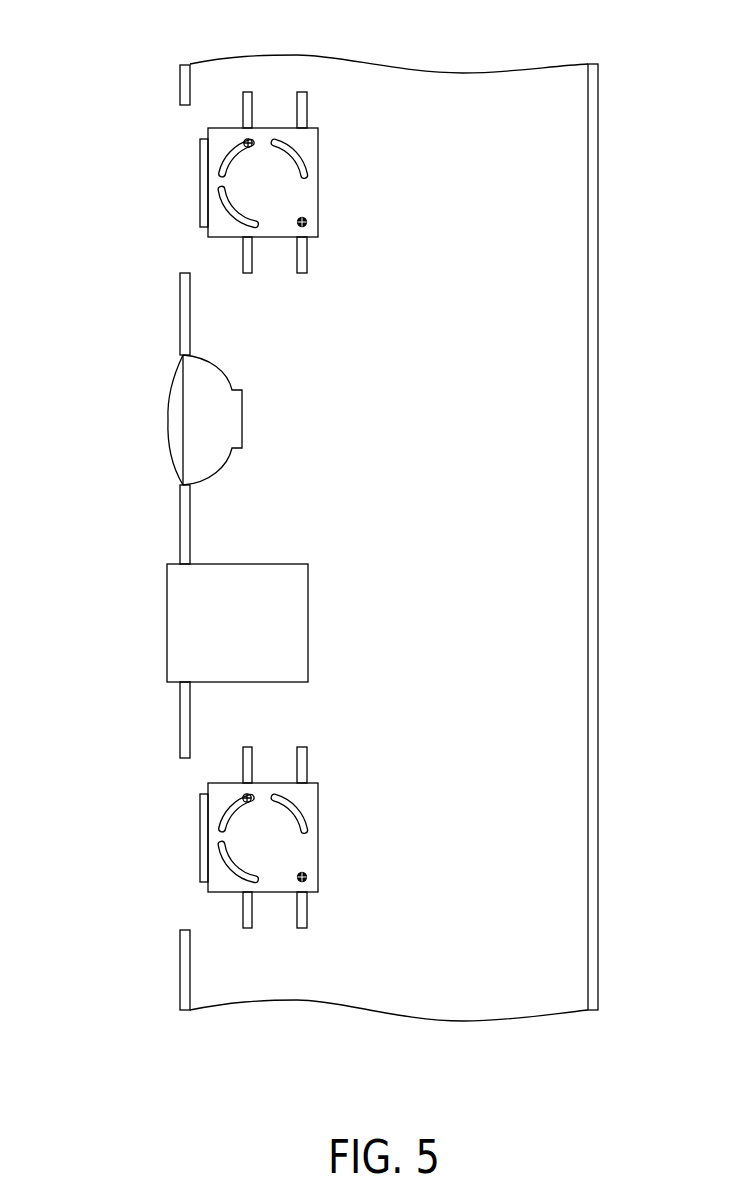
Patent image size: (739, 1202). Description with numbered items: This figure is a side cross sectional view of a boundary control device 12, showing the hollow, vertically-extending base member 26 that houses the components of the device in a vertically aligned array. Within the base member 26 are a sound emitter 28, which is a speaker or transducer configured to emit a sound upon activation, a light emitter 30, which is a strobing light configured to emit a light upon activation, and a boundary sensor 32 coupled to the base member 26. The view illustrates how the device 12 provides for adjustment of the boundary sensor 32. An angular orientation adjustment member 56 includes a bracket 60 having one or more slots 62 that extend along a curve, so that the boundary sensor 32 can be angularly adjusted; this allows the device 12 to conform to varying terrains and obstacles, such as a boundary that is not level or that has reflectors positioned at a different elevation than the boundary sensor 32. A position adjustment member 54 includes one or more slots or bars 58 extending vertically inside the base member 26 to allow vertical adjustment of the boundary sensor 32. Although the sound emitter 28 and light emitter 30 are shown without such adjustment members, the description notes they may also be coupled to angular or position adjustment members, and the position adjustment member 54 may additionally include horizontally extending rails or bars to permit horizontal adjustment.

The boundary control device 12 is at (636, 241).
The base member 26 is at (595, 496).
The sound emitter 28 is at (168, 432).
The light emitter 30 is at (167, 622).
The boundary sensor 32 is at (200, 193).
The position adjustment member 54 is at (248, 107).
The angular orientation adjustment member 56 is at (307, 163).
The slots or bars 58 is at (300, 258).
The bracket 60 is at (250, 178).
The slots 62 is at (237, 150).